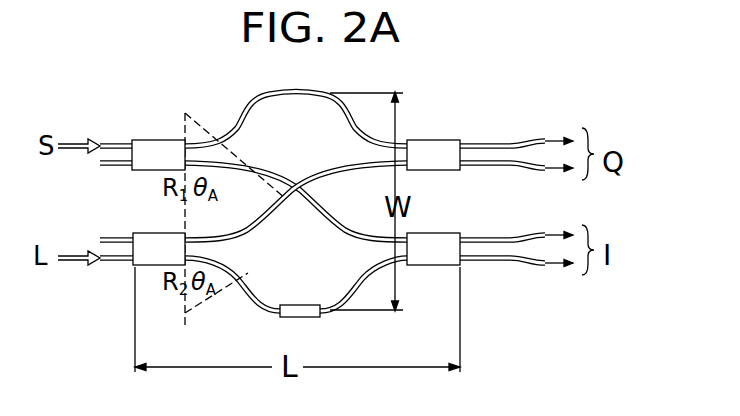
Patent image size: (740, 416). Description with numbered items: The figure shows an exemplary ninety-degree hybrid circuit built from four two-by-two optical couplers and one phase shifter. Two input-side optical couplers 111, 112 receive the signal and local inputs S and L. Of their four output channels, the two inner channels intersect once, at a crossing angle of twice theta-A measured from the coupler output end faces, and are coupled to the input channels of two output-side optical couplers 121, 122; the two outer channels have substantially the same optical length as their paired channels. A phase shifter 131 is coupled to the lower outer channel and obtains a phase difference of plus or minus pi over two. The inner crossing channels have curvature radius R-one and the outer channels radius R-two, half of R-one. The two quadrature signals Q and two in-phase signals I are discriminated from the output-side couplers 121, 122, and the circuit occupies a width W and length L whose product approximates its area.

The 2:2 optical coupler 111 is at (163, 139).
The 2:2 optical coupler 112 is at (141, 232).
The 2:2 optical coupler 121 is at (448, 139).
The 2:2 optical coupler 122 is at (447, 232).
The phase shifter 131 is at (307, 318).